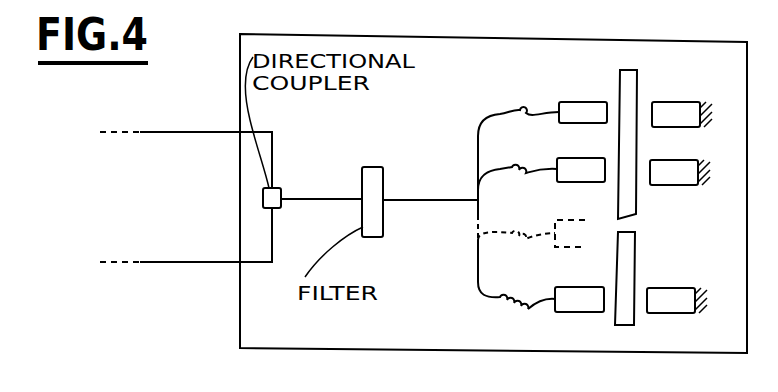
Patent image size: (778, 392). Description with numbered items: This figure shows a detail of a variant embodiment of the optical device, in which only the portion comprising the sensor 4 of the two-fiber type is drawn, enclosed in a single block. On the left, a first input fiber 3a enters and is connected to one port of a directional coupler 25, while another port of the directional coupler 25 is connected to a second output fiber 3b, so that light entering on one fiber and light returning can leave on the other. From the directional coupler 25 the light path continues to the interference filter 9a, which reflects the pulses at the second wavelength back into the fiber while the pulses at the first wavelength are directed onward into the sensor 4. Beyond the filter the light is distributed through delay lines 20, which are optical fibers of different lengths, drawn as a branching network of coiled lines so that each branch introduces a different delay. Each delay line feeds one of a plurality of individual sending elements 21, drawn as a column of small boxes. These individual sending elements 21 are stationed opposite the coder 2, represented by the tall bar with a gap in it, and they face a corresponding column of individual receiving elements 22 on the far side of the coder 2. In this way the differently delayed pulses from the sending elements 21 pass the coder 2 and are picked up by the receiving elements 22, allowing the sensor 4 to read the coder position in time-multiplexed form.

The coder 2 is at (624, 314).
The first input fiber 3a is at (160, 133).
The second output fiber 3b is at (160, 262).
The sensor 4 is at (396, 351).
The interference filter 9a is at (372, 172).
The delay lines 20 is at (500, 118).
The individual sending elements 21 is at (582, 108).
The individual receiving elements 22 is at (665, 118).
The directional coupler 25 is at (281, 190).